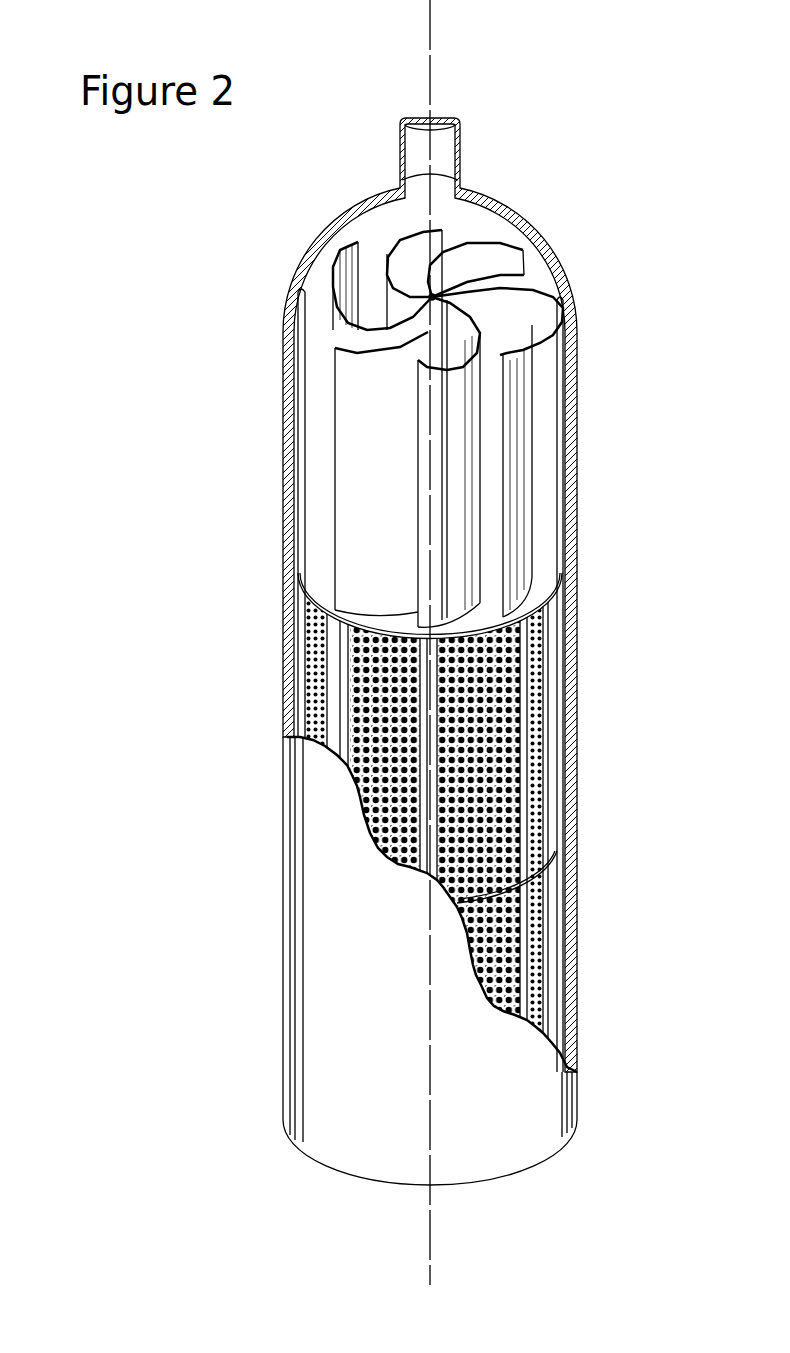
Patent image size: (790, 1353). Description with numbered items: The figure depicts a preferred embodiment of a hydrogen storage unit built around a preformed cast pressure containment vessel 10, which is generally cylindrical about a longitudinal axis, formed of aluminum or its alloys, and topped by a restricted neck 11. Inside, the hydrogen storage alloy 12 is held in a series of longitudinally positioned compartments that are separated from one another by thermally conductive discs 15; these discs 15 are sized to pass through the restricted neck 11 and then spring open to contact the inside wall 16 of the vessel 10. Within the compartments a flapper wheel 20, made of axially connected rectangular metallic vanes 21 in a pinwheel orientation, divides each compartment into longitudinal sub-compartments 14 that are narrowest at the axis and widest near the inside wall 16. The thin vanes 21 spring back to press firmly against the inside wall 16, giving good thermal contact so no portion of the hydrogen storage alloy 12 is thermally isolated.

The pressure containment vessel 10 is at (372, 208).
The restricted neck 11 is at (443, 148).
The hydrogen storage alloy 12 is at (480, 930).
The sub-compartments 14 is at (542, 510).
The discs 15 is at (318, 600).
The inside wall 16 is at (284, 333).
The flapper wheel 20 is at (432, 297).
The vanes 21 is at (435, 447).